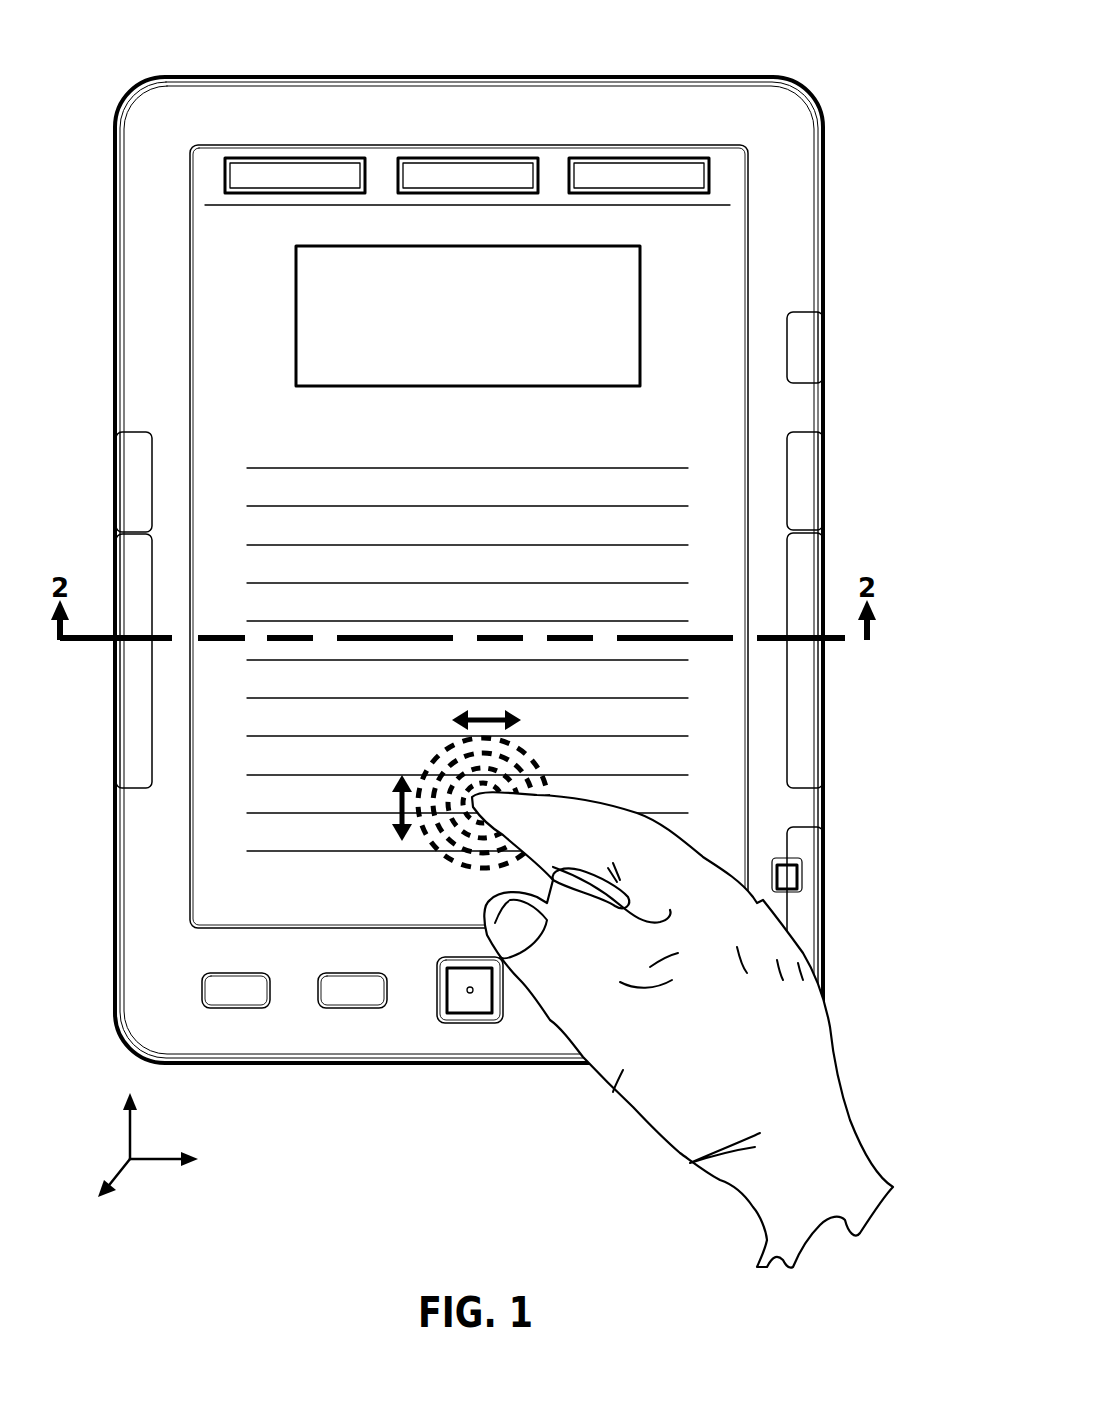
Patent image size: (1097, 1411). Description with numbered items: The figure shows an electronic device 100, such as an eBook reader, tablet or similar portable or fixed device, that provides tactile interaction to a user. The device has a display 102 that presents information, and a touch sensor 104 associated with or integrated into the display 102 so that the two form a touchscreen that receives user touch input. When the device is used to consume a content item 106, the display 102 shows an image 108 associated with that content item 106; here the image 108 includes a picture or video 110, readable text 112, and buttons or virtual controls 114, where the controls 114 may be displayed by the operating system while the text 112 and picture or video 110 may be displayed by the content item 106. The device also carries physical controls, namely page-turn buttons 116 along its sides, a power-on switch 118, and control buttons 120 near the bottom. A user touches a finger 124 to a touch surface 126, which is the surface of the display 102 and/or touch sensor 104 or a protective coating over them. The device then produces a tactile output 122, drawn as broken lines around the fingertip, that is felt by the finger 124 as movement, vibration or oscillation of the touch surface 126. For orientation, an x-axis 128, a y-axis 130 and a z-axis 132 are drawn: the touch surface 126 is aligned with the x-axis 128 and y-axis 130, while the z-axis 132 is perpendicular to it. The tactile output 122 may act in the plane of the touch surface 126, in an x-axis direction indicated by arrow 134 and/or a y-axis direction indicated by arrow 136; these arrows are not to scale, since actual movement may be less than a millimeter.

The electronic device 100 is at (110, 36).
The display 102 is at (575, 128).
The touch sensor 104 is at (214, 399).
The content item 106 is at (195, 239).
The image 108 is at (467, 422).
The picture or video 110 is at (296, 330).
The readable text 112 is at (400, 468).
The buttons or virtual controls 114 is at (295, 196).
The page-turn buttons 116 is at (115, 477).
The power-on switch 118 is at (805, 875).
The control buttons 120 is at (823, 358).
The tactile output 122 is at (440, 853).
The finger 124 is at (682, 1029).
The touch surface 126 is at (300, 886).
The x-axis 128 is at (165, 1159).
The y-axis 130 is at (129, 1130).
The z-axis 132 is at (115, 1182).
The arrow 134 is at (484, 708).
The arrow 136 is at (398, 806).